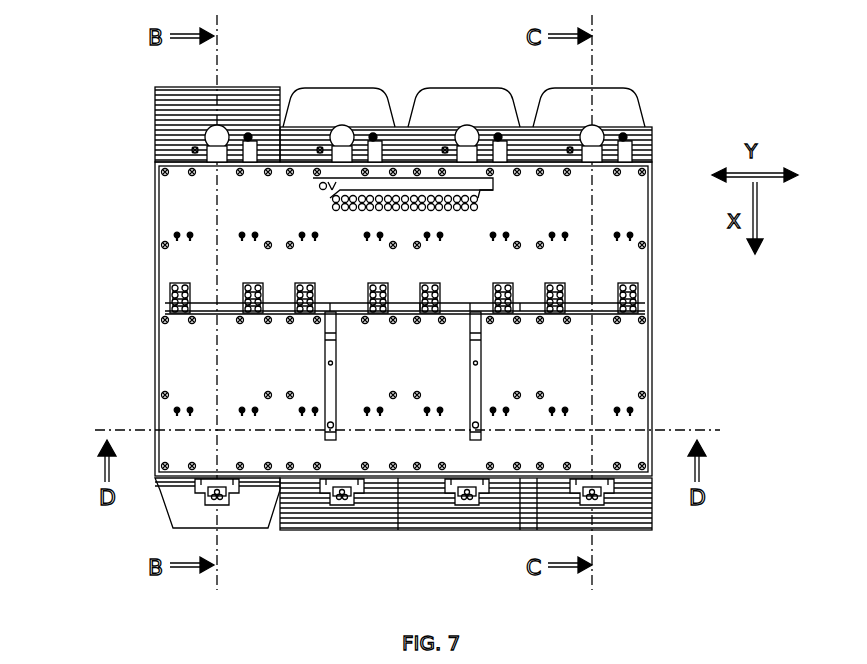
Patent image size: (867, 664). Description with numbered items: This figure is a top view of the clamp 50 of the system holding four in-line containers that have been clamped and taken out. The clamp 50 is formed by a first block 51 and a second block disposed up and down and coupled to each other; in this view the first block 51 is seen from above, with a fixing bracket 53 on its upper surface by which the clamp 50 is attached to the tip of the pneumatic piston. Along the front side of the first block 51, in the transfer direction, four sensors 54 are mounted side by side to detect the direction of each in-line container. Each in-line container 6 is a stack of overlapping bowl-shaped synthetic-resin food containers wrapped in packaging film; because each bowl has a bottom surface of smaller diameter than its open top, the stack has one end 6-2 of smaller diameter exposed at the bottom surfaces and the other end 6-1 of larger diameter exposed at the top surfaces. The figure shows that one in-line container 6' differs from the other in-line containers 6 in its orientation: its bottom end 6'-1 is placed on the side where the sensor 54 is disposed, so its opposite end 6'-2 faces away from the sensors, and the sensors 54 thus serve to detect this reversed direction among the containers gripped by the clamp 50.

The clamp 50 is at (326, 319).
The first block 51 is at (247, 207).
The fixing bracket 53 is at (303, 353).
The sensor 54 is at (322, 512).
The in-line container 6 is at (501, 538).
The other end of the in-line container 6-1 is at (668, 523).
The one end of the in-line container 6-2 is at (668, 103).
The in-line container 6' is at (173, 530).
The bottom end of the in-line container 6'-1 is at (176, 124).
The end of the in-line container 6'-2 is at (173, 508).